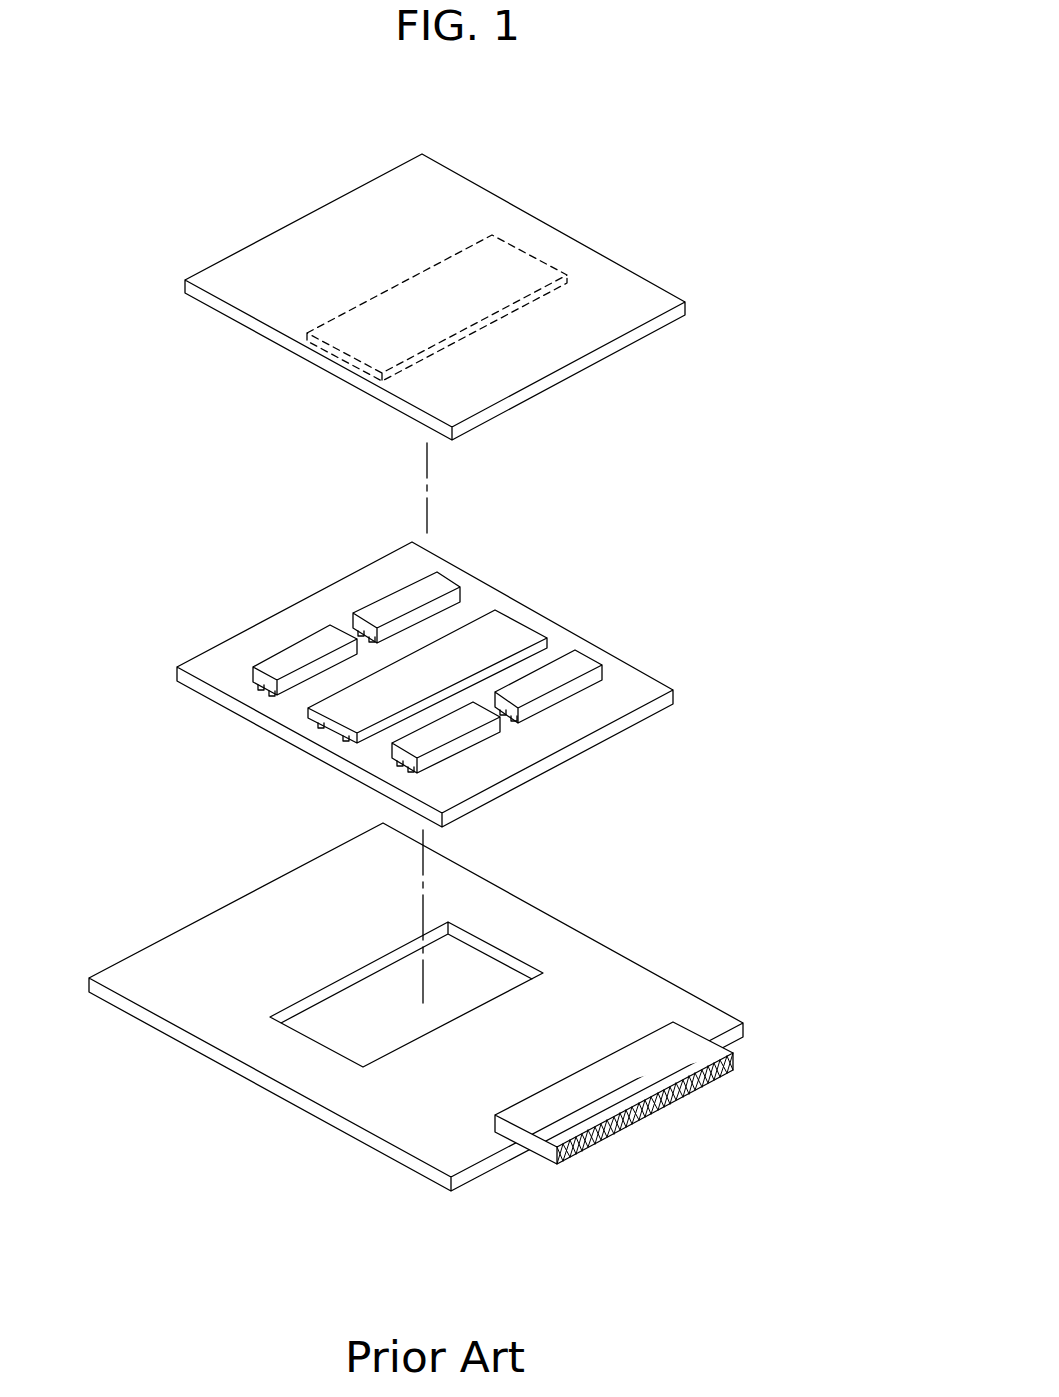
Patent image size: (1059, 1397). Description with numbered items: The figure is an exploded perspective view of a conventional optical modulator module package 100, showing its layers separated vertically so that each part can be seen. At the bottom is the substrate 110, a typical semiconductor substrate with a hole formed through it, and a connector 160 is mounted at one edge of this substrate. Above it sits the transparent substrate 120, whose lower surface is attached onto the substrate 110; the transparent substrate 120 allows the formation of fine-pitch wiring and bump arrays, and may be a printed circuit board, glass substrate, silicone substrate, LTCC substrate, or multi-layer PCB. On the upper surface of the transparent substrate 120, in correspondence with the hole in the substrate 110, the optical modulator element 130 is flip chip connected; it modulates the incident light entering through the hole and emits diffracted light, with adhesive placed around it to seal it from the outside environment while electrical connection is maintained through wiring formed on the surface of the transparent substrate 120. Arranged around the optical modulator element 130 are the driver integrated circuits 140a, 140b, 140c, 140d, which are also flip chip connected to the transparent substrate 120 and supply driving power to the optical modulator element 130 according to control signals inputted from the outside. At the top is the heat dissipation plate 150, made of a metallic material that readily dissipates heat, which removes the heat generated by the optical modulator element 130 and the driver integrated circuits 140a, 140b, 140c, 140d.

The optical modulator module package 100 is at (670, 146).
The substrate 110 is at (583, 943).
The transparent substrate 120 is at (660, 685).
The optical modulator element 130 is at (507, 625).
The driver integrated circuit 140a is at (270, 662).
The driver integrated circuit 140b is at (445, 582).
The driver integrated circuit 140c is at (448, 747).
The driver integrated circuit 140d is at (582, 658).
The heat dissipation plate 150 is at (467, 200).
The connector 160 is at (720, 1055).